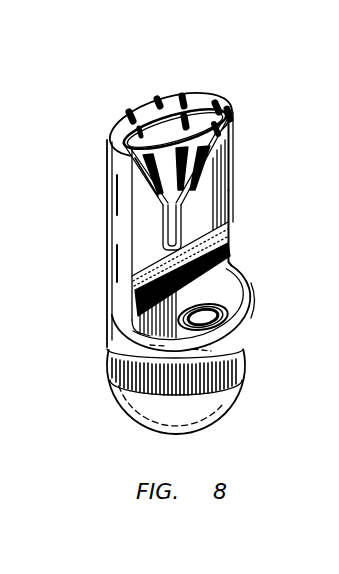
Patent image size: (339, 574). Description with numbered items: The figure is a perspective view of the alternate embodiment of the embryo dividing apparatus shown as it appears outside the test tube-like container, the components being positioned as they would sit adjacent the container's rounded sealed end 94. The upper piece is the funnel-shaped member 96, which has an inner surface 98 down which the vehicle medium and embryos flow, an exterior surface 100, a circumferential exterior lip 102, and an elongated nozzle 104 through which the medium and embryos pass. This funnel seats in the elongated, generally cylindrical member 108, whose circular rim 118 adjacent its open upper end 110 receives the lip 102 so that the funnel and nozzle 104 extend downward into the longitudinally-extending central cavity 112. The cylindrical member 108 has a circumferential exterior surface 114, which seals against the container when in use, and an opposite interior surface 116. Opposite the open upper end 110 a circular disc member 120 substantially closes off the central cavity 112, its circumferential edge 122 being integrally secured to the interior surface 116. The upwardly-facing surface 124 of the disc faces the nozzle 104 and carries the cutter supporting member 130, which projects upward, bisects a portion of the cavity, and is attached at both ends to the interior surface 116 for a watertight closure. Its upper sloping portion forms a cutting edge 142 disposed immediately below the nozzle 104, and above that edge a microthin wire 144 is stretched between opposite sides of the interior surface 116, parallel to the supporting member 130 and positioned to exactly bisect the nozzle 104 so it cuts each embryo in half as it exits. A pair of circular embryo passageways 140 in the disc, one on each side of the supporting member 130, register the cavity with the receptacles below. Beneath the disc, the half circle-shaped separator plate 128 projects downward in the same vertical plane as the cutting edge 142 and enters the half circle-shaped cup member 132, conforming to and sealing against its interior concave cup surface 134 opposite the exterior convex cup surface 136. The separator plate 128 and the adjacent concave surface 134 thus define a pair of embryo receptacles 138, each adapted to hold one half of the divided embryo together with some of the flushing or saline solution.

The rounded sealed end 94 is at (140, 445).
The funnel-shaped member 96 is at (228, 116).
The inner surface 98 is at (167, 122).
The exterior surface 100 is at (108, 149).
The circumferential exterior lip 102 is at (113, 172).
The elongated nozzle 104 is at (167, 228).
The cylindrical member 108 is at (122, 195).
The open upper end 110 is at (232, 127).
The central cavity 112 is at (230, 193).
The circumferential exterior surface 114 is at (115, 245).
The interior surface 116 is at (230, 156).
The circular rim 118 is at (230, 108).
The disc member 120 is at (137, 333).
The circumferential edge 122 is at (246, 306).
The upwardly-facing surface 124 is at (138, 345).
The separator plate 128 is at (137, 409).
The cutter supporting member 130 is at (236, 272).
The cup member 132 is at (214, 422).
The interior concave cup surface 134 is at (242, 392).
The exterior convex cup surface 136 is at (116, 390).
The embryo receptacles 138 is at (110, 356).
The embryo passageways 140 is at (236, 327).
The cutting edge 142 is at (219, 244).
The wire 144 is at (128, 257).